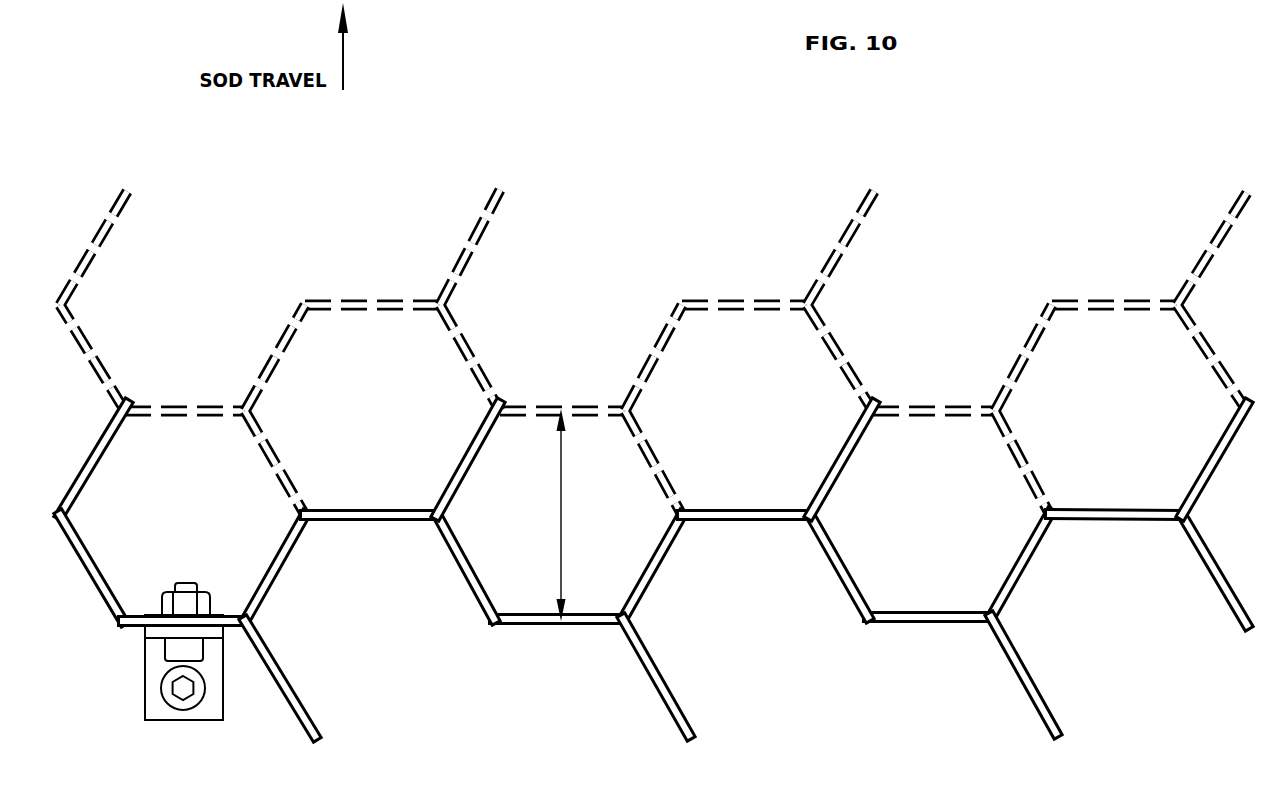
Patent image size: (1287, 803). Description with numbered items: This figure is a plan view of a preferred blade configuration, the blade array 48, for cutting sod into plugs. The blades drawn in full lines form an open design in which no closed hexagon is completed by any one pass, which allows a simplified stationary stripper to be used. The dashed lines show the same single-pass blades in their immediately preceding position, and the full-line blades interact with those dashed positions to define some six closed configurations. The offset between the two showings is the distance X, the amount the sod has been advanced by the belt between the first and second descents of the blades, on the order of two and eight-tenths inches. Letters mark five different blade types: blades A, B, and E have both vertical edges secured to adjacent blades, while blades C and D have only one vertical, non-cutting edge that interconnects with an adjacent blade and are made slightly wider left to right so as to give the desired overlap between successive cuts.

The blade type A is at (412, 522).
The blade type B is at (84, 567).
The blade type C is at (458, 462).
The blade type D is at (88, 460).
The blade type E is at (283, 563).
The distance X is at (560, 515).
The blade array 48 is at (479, 763).